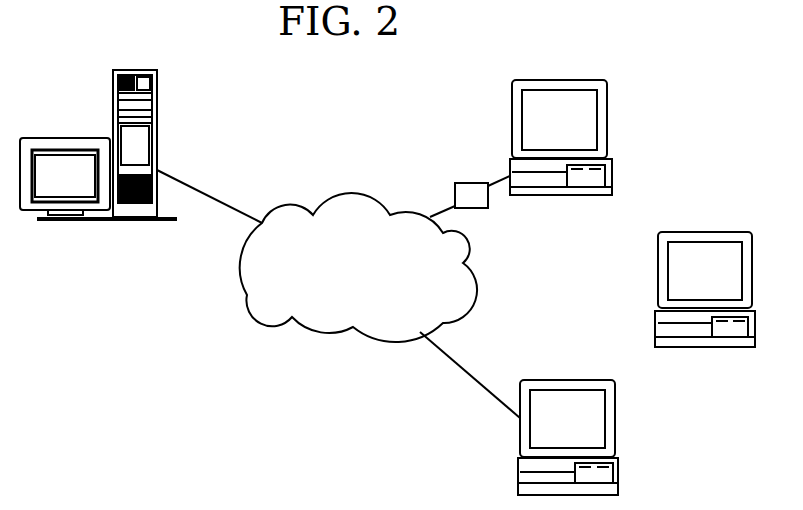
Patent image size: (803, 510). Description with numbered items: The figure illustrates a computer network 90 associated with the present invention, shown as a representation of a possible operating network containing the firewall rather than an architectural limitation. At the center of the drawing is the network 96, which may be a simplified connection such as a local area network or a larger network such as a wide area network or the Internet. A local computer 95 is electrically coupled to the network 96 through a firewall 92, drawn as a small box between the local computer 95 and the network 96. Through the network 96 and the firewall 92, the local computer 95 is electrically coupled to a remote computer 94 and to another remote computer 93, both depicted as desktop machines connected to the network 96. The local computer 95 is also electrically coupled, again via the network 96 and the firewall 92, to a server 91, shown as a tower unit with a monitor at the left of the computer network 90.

The computer network 90 is at (226, 85).
The server 91 is at (130, 70).
The firewall 92 is at (465, 183).
The remote computer 93 is at (615, 425).
The remote computer 94 is at (752, 280).
The local computer 95 is at (607, 128).
The network 96 is at (358, 267).